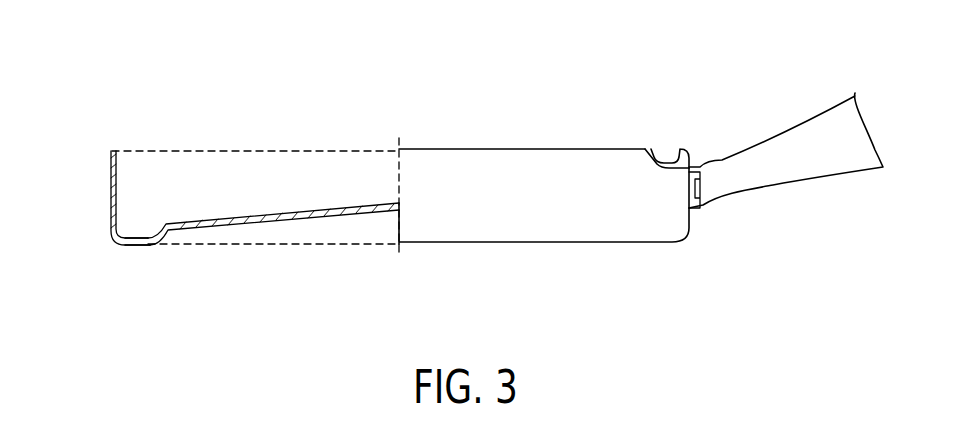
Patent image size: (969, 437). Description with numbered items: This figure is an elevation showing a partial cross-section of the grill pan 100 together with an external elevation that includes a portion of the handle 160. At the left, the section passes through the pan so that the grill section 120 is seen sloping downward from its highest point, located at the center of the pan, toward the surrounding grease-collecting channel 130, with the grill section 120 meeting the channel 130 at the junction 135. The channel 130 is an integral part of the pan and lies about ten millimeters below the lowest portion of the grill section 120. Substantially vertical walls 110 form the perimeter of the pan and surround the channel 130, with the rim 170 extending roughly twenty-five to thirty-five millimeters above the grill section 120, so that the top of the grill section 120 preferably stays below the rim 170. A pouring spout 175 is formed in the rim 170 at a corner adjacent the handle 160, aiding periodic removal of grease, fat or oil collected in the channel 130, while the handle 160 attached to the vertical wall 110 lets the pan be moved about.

The grill pan 100 is at (583, 74).
The vertical walls 110 is at (110, 181).
The grill section 120 is at (304, 207).
The collecting channel 130 is at (126, 236).
The junction 135 is at (228, 218).
The handle 160 is at (773, 131).
The rim 170 is at (112, 150).
The pouring spout 175 is at (674, 156).